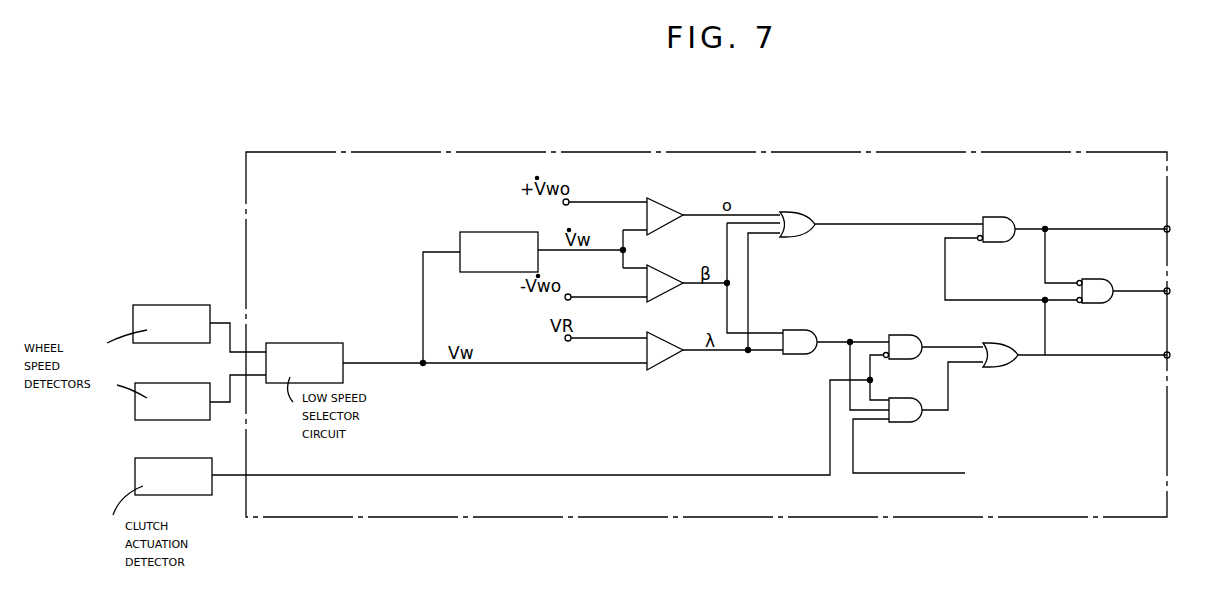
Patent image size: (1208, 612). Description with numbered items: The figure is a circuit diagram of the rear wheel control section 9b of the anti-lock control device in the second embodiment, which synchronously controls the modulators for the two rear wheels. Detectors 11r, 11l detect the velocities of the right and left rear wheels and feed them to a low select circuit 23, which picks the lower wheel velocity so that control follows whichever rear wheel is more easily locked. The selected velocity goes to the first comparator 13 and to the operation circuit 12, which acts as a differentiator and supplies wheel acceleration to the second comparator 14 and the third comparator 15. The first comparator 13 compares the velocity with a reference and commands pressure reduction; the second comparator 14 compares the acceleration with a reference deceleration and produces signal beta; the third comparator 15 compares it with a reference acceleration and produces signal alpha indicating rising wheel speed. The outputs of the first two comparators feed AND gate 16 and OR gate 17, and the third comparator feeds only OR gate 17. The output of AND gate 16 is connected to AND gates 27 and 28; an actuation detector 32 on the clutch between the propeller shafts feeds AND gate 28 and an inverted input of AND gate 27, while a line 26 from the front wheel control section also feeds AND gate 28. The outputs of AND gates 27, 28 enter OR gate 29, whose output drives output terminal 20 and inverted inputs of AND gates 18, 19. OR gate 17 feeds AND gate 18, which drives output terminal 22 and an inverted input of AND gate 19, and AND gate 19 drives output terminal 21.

The rear wheel control section 9b is at (651, 152).
The detector 11r is at (168, 309).
The detector 11l is at (168, 389).
The actuation detector 32 is at (170, 466).
The low select circuit 23 is at (305, 351).
The operation circuit 12 is at (492, 240).
The third comparator 15 is at (667, 209).
The second comparator 14 is at (667, 277).
The first comparator 13 is at (667, 342).
The OR gate 17 is at (791, 212).
The AND gate 16 is at (795, 330).
The AND gate 18 is at (993, 217).
The AND gate 19 is at (1092, 280).
The AND gate 27 is at (898, 336).
The AND gate 28 is at (905, 422).
The OR gate 29 is at (998, 345).
The line 26 is at (931, 474).
The output terminal 22 is at (1170, 229).
The output terminal 21 is at (1170, 291).
The output terminal 20 is at (1170, 355).